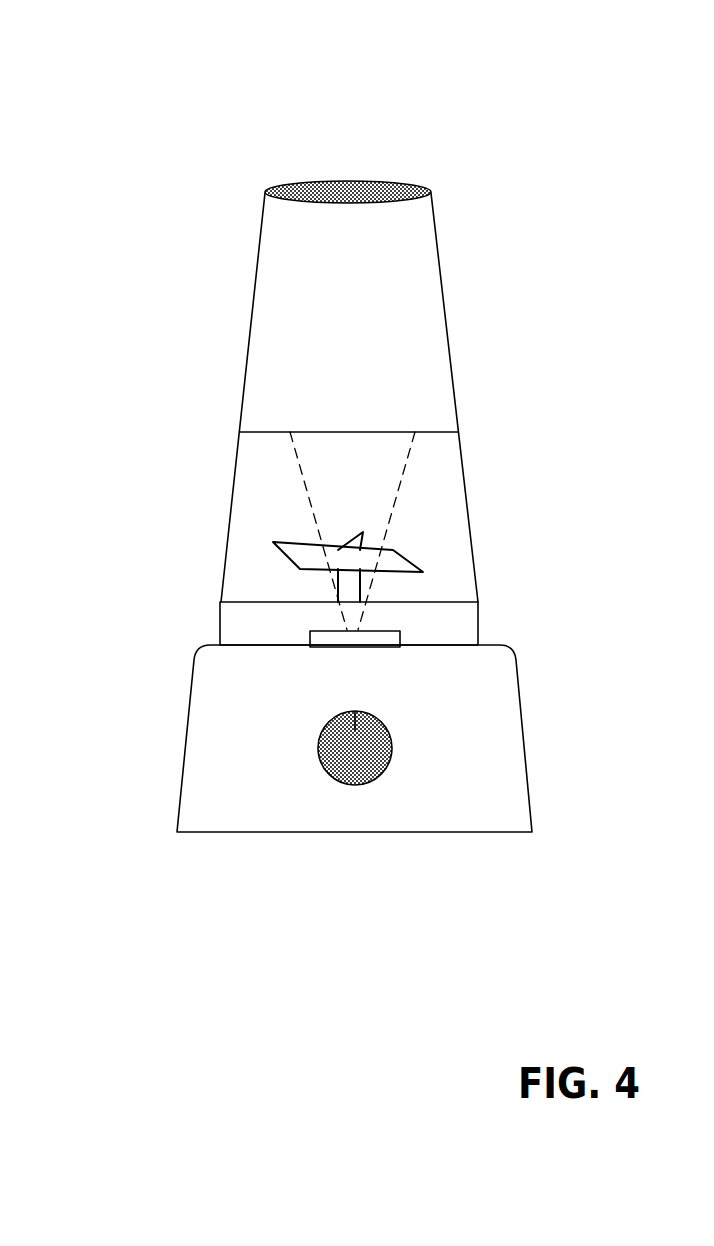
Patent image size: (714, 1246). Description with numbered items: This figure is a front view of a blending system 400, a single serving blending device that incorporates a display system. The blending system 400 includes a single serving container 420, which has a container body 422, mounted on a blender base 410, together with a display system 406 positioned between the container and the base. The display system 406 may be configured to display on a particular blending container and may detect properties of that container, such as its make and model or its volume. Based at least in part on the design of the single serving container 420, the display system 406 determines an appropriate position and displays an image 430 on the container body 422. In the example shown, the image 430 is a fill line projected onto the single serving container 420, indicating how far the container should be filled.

The blending system 400 is at (170, 50).
The single serving container 420 is at (151, 315).
The container body 422 is at (448, 333).
The image 430 is at (257, 430).
The display system 406 is at (320, 637).
The blender base 410 is at (185, 762).